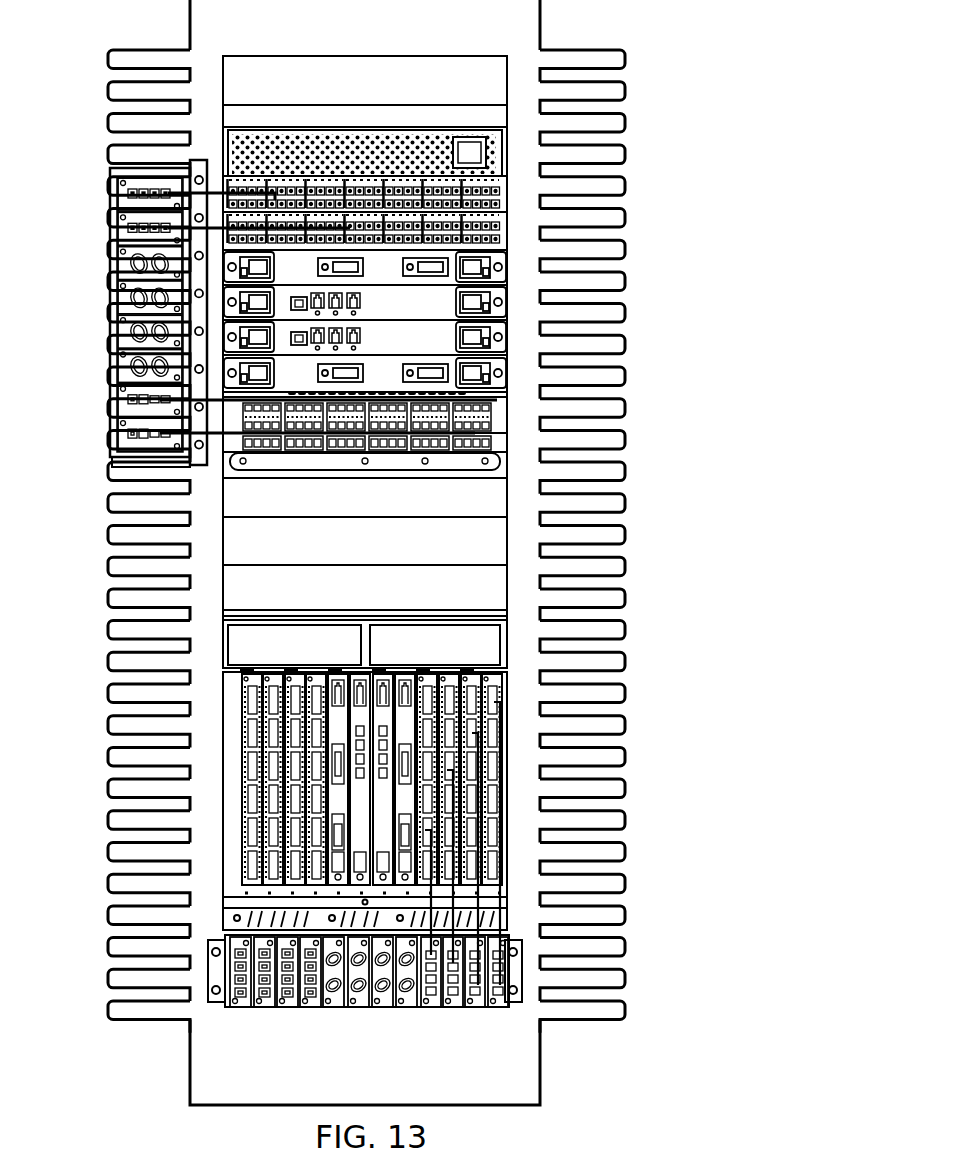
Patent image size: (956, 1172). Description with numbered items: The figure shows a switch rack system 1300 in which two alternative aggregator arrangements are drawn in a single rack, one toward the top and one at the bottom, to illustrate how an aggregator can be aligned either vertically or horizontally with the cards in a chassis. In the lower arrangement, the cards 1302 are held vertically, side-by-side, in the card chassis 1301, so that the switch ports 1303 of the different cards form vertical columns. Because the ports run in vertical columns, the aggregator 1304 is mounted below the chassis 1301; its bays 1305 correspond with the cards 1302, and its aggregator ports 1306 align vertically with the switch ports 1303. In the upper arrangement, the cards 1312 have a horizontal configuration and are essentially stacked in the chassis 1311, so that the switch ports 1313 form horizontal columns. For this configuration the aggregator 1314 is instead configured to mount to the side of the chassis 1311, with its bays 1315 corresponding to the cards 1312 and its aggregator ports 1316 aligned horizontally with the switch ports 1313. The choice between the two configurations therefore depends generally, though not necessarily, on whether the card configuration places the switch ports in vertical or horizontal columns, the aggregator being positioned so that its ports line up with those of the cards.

The switch rack system 1300 is at (643, 197).
The card chassis 1301 is at (493, 827).
The cards 1302 is at (500, 866).
The switch ports 1303 is at (493, 708).
The aggregator 1304 is at (500, 1000).
The bays 1305 is at (487, 997).
The aggregator ports 1306 is at (463, 995).
The chassis 1311 is at (506, 292).
The cards 1312 is at (503, 397).
The switch ports 1313 is at (500, 456).
The aggregator 1314 is at (113, 258).
The bays 1315 is at (120, 203).
The aggregator ports 1316 is at (130, 185).